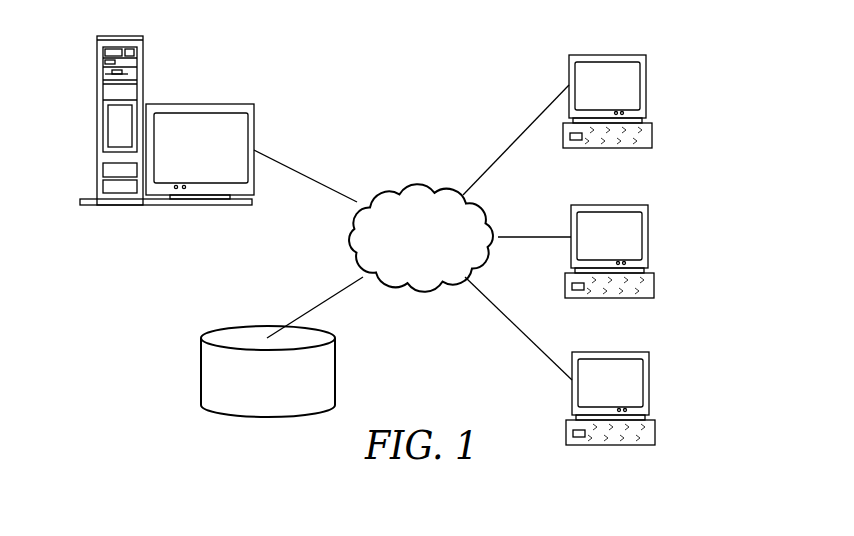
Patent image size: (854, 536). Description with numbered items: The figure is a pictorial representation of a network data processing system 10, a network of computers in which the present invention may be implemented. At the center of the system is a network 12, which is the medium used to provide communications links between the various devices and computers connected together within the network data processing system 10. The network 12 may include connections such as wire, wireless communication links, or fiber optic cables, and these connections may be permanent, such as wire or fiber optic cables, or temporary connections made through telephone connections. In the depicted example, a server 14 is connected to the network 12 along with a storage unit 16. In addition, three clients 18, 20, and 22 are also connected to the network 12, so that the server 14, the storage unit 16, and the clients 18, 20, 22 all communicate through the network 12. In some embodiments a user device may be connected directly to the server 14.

The network data processing system 10 is at (476, 60).
The network 12 is at (392, 185).
The server 14 is at (97, 123).
The storage unit 16 is at (201, 372).
The client 18 is at (645, 85).
The client 20 is at (646, 235).
The client 22 is at (648, 380).